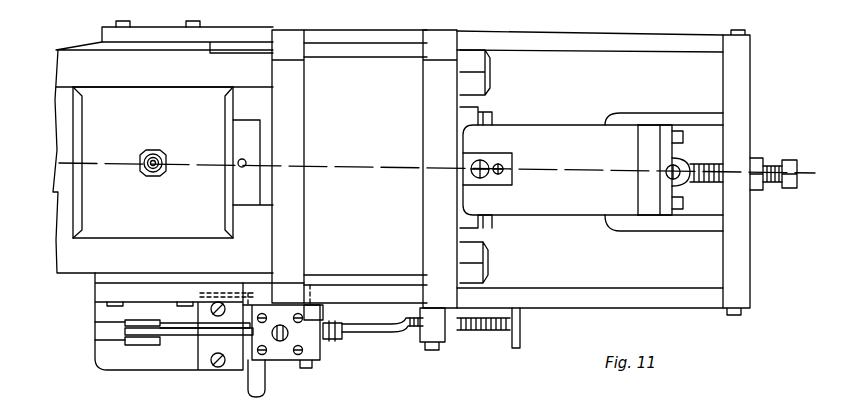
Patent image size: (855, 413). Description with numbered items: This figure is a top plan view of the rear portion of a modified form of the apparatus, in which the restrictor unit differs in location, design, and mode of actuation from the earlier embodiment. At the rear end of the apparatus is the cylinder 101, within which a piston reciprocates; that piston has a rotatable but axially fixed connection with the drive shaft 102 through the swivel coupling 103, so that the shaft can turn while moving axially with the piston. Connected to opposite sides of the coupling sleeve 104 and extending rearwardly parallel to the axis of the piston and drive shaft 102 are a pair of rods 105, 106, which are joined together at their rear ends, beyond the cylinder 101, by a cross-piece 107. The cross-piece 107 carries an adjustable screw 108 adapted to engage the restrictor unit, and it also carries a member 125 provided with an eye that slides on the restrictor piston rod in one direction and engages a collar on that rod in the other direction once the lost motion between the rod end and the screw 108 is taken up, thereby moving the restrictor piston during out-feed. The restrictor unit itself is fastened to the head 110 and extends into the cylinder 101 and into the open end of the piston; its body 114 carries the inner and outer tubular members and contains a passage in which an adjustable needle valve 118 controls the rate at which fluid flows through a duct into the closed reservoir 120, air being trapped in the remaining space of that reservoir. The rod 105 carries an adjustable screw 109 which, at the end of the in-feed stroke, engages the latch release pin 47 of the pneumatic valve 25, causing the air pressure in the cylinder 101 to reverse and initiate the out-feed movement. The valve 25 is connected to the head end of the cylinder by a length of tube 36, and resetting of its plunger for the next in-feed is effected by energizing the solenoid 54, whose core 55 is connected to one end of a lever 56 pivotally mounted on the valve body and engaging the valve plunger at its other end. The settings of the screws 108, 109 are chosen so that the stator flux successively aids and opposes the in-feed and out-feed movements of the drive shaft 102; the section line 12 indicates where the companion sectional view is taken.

The section line 12 is at (59, 163).
The pneumatic valve 25 is at (280, 356).
The tube 36 is at (395, 335).
The pin 47 is at (322, 316).
The solenoid 54 is at (150, 360).
The core or plunger 55 is at (128, 348).
The lever 56 is at (186, 335).
The cylinder 101 is at (373, 265).
The drive shaft 102 is at (104, 182).
The swivel coupling 103 is at (130, 236).
The coupling sleeve 104 is at (200, 225).
The rod 105 is at (550, 297).
The rod 106 is at (570, 42).
The cross-piece 107 is at (738, 277).
The adjustable screw 108 is at (790, 190).
The adjustable screw 109 is at (515, 349).
The head 110 is at (435, 140).
The body 114 is at (470, 108).
The adjustable needle valve 118 is at (490, 182).
The closed reservoir 120 is at (573, 215).
The member 125 is at (672, 224).